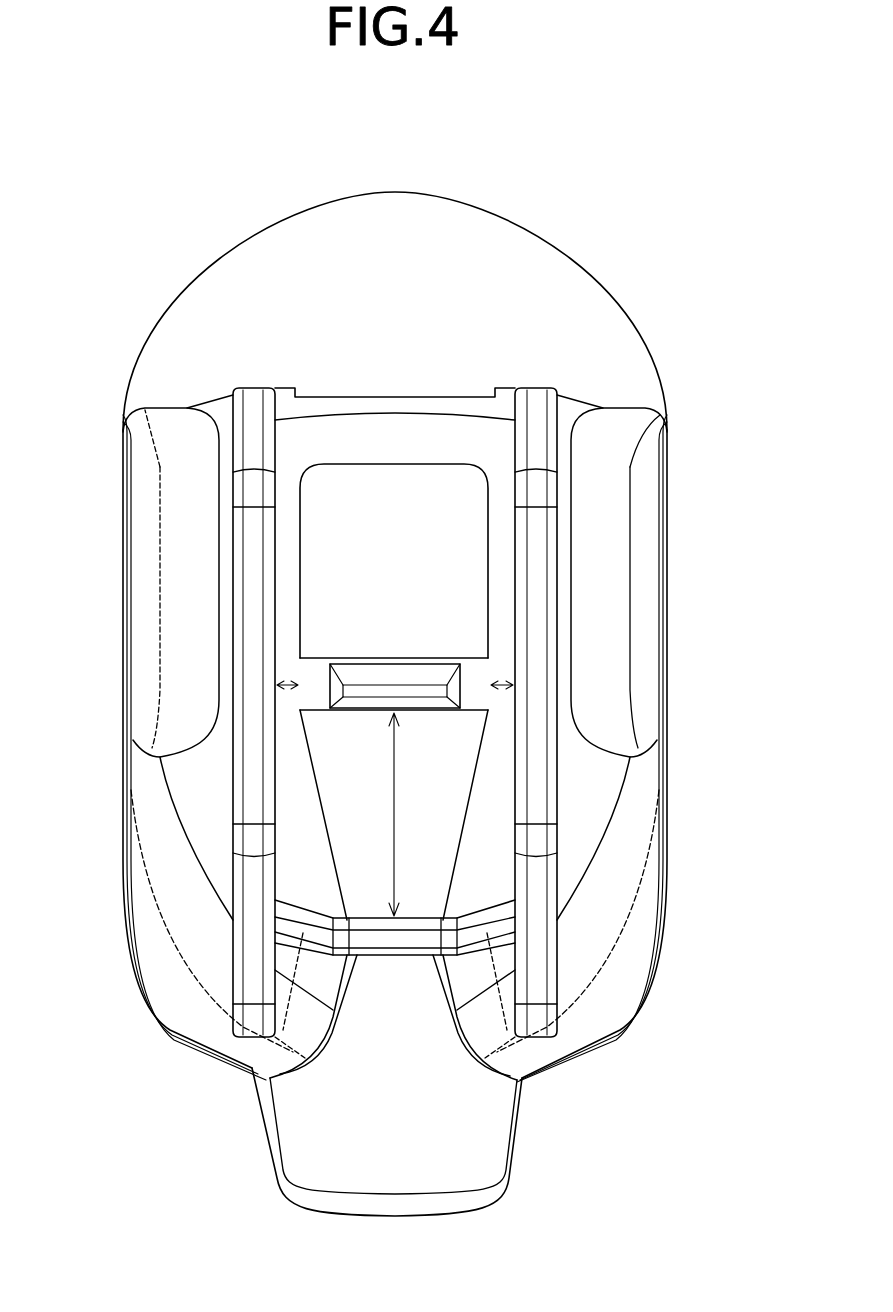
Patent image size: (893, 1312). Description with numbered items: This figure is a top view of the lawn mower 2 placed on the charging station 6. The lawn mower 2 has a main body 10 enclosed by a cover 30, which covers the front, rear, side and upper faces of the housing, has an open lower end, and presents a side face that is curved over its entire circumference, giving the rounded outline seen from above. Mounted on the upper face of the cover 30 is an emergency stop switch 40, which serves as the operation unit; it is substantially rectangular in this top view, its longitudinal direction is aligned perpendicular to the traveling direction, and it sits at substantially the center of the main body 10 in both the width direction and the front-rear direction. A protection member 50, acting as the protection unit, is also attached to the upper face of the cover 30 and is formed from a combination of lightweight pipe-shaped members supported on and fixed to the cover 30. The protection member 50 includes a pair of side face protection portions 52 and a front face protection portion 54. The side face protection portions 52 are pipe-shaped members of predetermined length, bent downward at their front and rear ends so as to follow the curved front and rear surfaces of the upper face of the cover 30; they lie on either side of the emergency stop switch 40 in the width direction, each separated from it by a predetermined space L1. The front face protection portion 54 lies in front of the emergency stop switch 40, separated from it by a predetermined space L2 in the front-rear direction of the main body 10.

The lawn mower 2 is at (640, 542).
The charging station 6 is at (626, 316).
The main body 10 is at (397, 279).
The cover 30 is at (434, 393).
The emergency stop switch 40 is at (368, 668).
The protection member 50 is at (572, 925).
The side face protection portions 52 is at (238, 450).
The front face protection portion 54 is at (507, 1035).
The predetermined space L1 is at (288, 682).
The predetermined space L2 is at (394, 806).